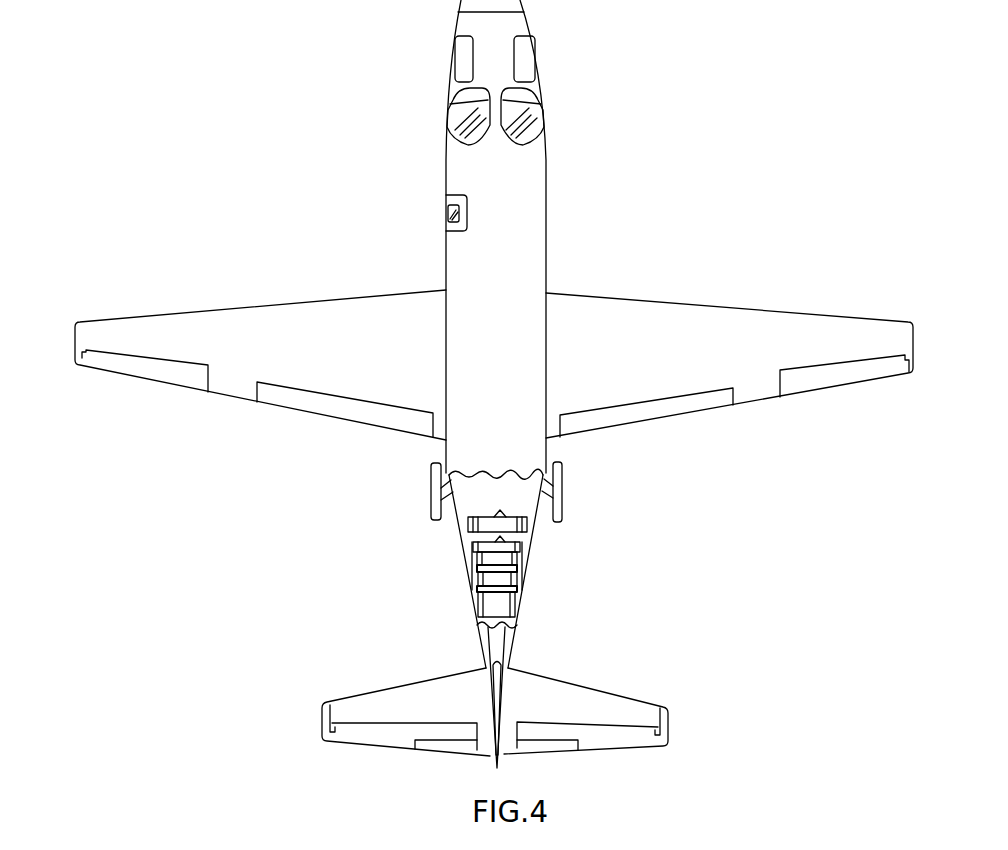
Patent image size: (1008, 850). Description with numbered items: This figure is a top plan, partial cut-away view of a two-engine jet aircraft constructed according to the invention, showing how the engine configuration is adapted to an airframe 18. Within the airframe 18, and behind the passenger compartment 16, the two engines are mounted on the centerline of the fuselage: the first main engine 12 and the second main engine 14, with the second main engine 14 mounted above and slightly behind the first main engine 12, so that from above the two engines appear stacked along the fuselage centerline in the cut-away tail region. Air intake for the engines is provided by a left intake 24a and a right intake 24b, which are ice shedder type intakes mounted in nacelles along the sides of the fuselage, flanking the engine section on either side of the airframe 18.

The airframe 18 is at (637, 219).
The passenger compartment 16 is at (520, 300).
The left ice shedder type intake 24a is at (431, 491).
The right ice shedder type intake 24b is at (562, 485).
The first main engine 12 is at (468, 523).
The second main engine 14 is at (508, 576).